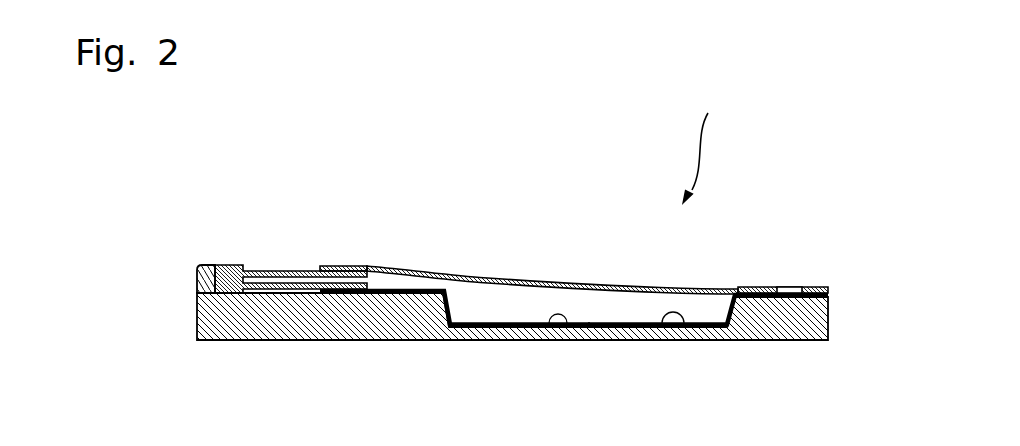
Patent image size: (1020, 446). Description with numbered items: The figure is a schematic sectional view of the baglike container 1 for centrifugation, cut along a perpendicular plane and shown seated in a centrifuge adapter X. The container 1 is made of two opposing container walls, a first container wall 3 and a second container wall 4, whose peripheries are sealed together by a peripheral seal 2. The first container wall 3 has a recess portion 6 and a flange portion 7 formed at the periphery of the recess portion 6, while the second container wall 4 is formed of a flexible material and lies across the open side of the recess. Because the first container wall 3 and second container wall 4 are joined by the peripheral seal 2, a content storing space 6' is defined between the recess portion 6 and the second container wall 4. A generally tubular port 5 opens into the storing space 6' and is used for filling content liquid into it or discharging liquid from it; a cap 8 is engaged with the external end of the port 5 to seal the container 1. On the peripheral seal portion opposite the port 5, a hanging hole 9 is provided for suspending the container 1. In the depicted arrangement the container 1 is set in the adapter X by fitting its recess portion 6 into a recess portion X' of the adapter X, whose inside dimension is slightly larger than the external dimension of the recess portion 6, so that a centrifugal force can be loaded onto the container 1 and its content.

The baglike container 1 is at (703, 140).
The peripheral seal 2 is at (752, 287).
The first container wall 3 is at (652, 327).
The second container wall 4 is at (551, 284).
The port 5 is at (277, 268).
The recess portion of first container wall 6 is at (455, 239).
The content storing space 6' is at (708, 217).
The flange portion of first container wall 7 is at (398, 266).
The cap 8 is at (212, 265).
The hanging hole 9 is at (790, 287).
The adapter X is at (512, 364).
The recess portion of adapter X' is at (588, 377).